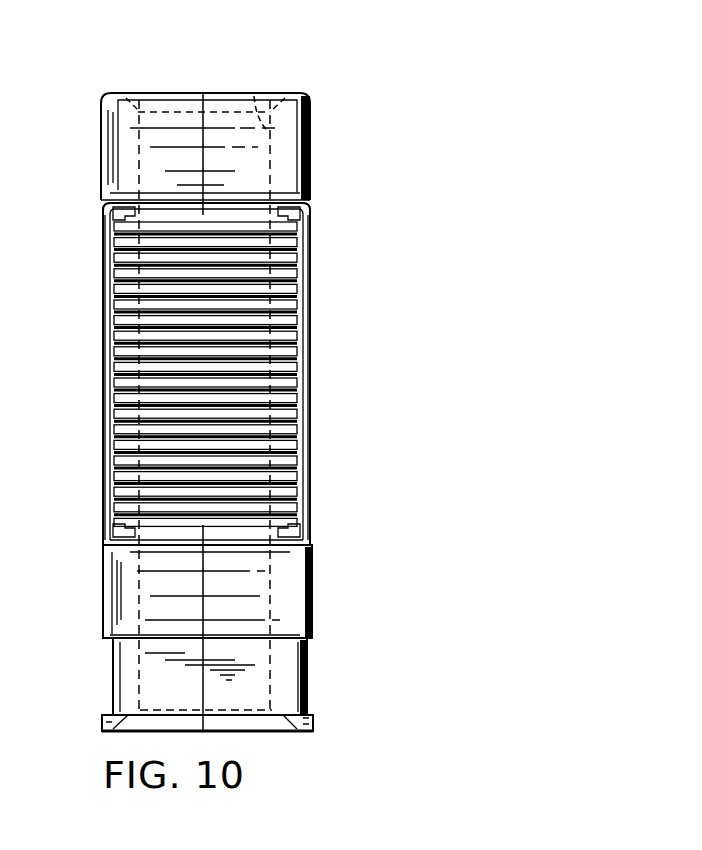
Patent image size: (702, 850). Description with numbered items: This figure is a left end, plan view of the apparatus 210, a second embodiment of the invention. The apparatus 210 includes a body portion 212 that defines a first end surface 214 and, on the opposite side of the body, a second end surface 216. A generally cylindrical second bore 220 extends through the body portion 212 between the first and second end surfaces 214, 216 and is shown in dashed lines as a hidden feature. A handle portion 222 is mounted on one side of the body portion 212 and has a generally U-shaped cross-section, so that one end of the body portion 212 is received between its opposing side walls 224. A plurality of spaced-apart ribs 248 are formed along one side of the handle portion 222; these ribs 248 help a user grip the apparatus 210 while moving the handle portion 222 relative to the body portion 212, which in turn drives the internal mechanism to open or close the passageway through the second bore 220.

The apparatus 210 is at (322, 78).
The body portion 212 is at (318, 143).
The first end surface 214 is at (270, 732).
The second end surface 216 is at (150, 92).
The second bore 220 is at (256, 92).
The handle portion 222 is at (305, 249).
The side walls 224 is at (100, 274).
The ribs 248 is at (118, 422).